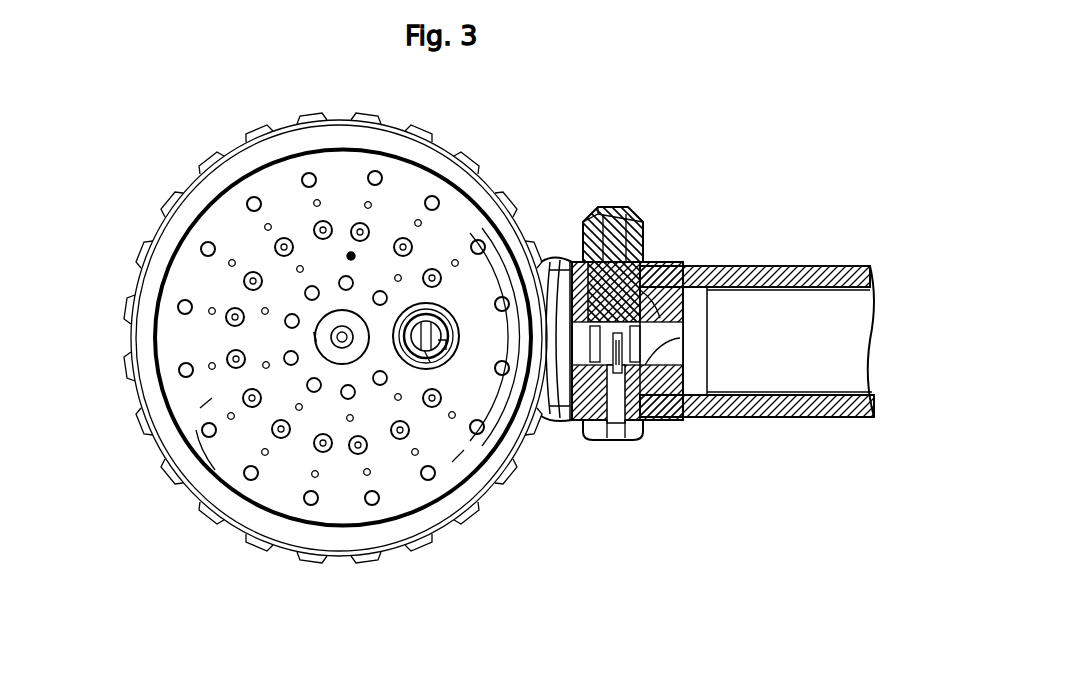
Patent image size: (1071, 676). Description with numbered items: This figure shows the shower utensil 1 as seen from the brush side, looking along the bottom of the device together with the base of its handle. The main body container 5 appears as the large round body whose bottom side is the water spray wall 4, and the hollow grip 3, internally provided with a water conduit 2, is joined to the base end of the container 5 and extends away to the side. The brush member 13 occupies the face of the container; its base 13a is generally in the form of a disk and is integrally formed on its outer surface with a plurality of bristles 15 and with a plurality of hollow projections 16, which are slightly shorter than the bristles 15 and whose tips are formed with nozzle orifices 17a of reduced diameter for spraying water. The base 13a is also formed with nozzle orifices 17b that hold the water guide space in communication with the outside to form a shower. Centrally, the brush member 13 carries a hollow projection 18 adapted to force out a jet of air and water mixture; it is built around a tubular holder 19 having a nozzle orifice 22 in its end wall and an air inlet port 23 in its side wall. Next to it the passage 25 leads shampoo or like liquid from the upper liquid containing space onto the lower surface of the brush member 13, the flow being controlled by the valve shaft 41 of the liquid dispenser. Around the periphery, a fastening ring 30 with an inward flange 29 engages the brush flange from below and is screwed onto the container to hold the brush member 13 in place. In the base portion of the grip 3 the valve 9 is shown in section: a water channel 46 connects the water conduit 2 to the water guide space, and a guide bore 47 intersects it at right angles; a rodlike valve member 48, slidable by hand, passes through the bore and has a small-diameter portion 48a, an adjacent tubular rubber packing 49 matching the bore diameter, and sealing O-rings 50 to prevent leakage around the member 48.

The shower utensil 1 is at (535, 190).
The water conduit 2 is at (785, 285).
The grip 3 is at (850, 266).
The water spray wall 4 is at (346, 496).
The main body container 5 is at (178, 492).
The valve 9 is at (650, 300).
The brush member 13 is at (283, 486).
The base 13a is at (227, 463).
The bristles 15 is at (375, 170).
The hollow projections 16 is at (408, 238).
The nozzle orifice 17a is at (297, 265).
The nozzle orifices 17b is at (208, 312).
The hollow projection 18 is at (425, 352).
The tubular holder 19 is at (372, 322).
The nozzle orifice 22 is at (330, 350).
The air inlet port 23 is at (315, 336).
The passage 25 is at (443, 347).
The inward flange 29 is at (148, 303).
The fastening ring 30 is at (142, 283).
The valve shaft 41 is at (497, 497).
The water channel 46 is at (707, 340).
The guide bore 47 is at (640, 438).
The valve member 48 is at (618, 442).
The small-diameter portion 48a is at (660, 312).
The rubber packing 49 is at (640, 290).
The sealing O-ring 50 is at (602, 262).